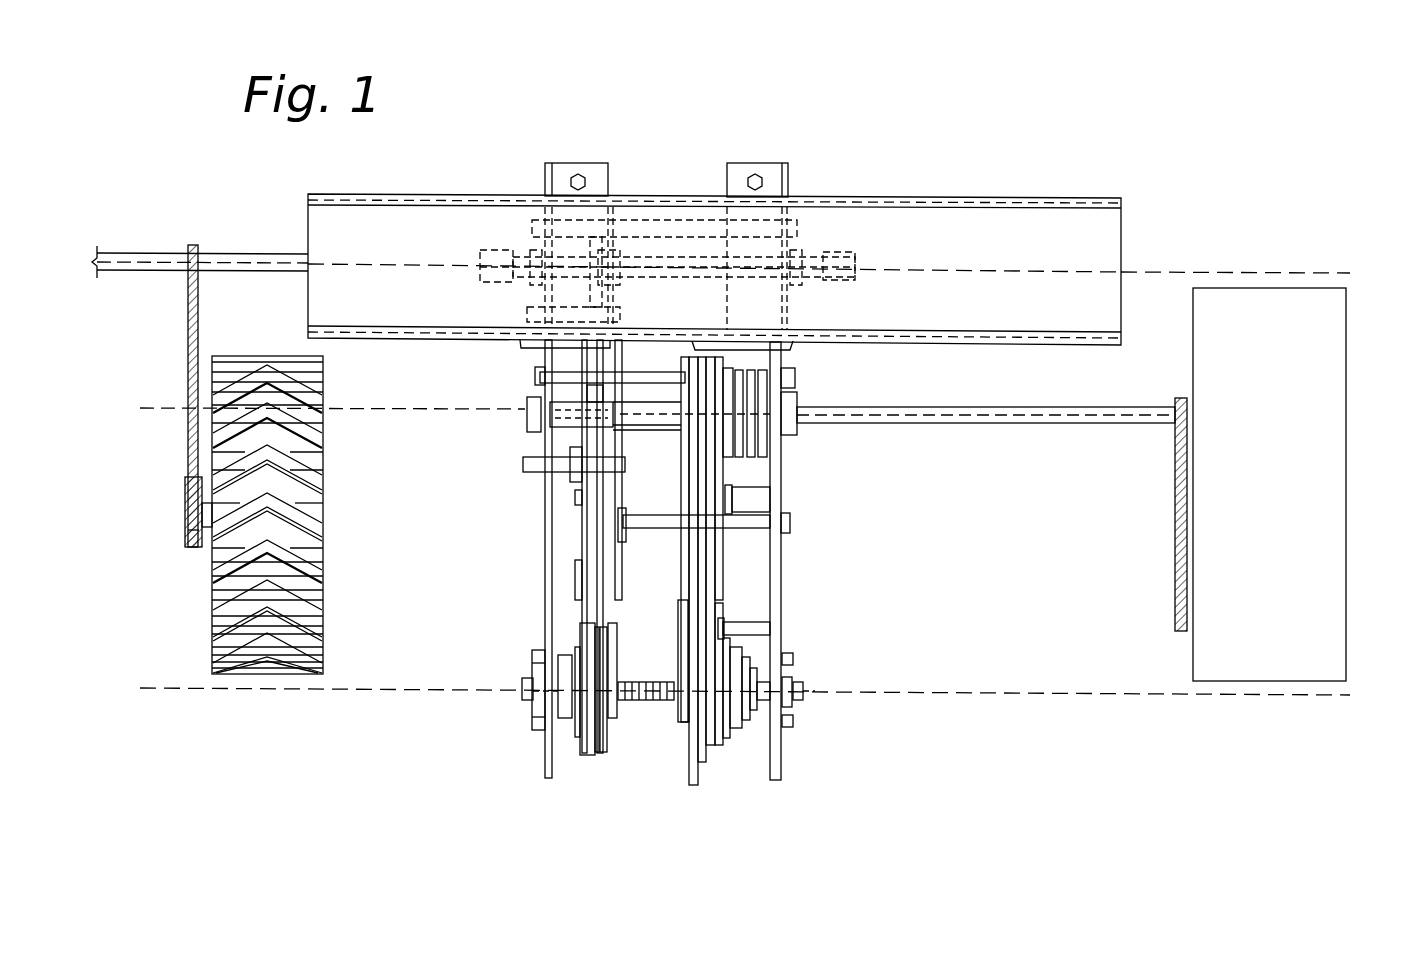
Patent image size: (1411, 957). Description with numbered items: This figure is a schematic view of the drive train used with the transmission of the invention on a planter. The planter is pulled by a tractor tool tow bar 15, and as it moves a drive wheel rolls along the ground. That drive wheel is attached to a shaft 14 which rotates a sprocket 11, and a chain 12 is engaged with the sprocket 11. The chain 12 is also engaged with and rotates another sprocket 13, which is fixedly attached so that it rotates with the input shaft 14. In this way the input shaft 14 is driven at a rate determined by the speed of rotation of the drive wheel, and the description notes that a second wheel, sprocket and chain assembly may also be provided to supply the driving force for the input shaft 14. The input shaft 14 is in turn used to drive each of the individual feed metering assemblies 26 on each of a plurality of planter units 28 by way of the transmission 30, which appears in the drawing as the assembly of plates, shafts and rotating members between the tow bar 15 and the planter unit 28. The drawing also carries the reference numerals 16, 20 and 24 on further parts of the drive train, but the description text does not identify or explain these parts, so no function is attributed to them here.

The sprocket 11 is at (185, 536).
The chain 12 is at (187, 449).
The sprocket 13 is at (188, 305).
The input shaft 14 is at (130, 260).
The tractor tool tow bar 15 is at (913, 197).
The gearbox 16 is at (637, 222).
The gear 20 is at (647, 702).
The drive shaft 24 is at (1101, 407).
The feed metering assembly 26 is at (1175, 525).
The planter unit 28 is at (1346, 615).
The transmission 30 is at (812, 585).